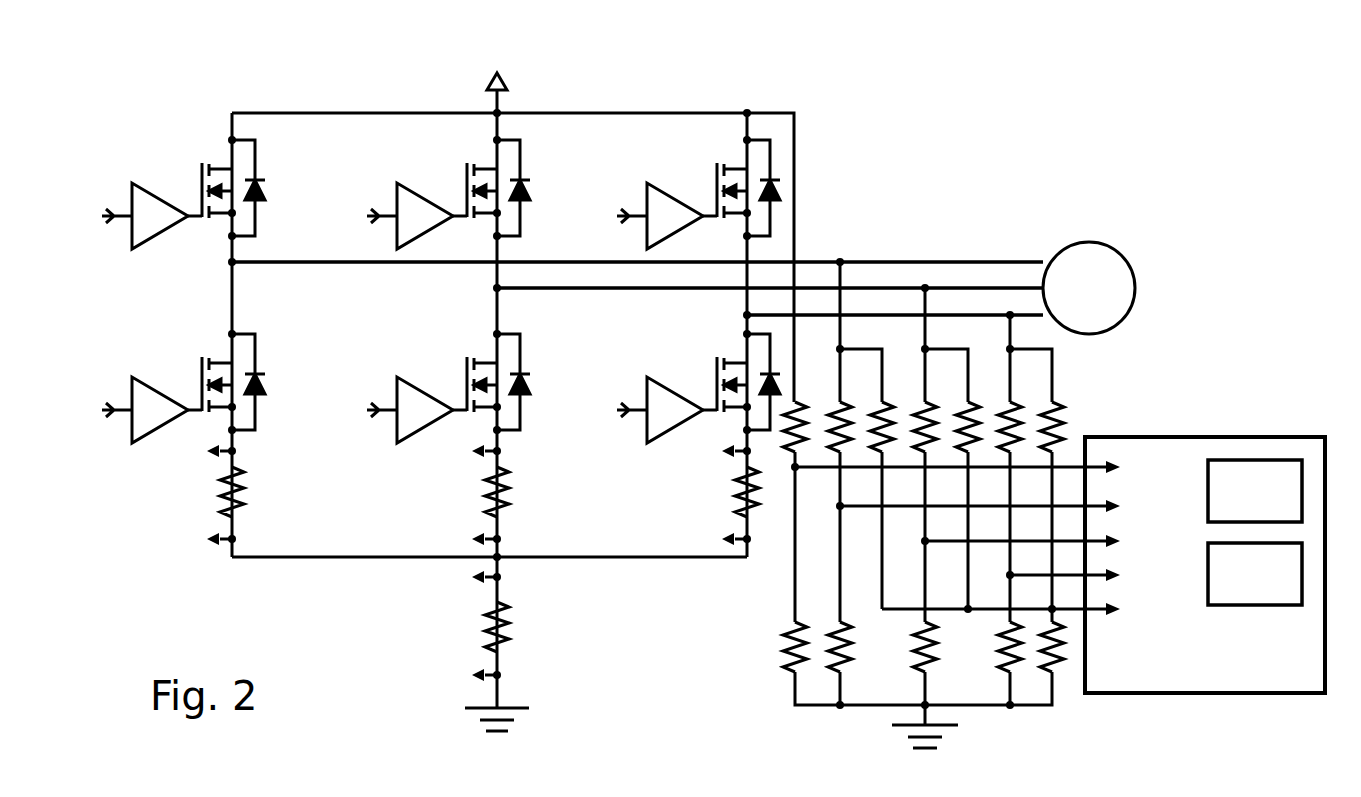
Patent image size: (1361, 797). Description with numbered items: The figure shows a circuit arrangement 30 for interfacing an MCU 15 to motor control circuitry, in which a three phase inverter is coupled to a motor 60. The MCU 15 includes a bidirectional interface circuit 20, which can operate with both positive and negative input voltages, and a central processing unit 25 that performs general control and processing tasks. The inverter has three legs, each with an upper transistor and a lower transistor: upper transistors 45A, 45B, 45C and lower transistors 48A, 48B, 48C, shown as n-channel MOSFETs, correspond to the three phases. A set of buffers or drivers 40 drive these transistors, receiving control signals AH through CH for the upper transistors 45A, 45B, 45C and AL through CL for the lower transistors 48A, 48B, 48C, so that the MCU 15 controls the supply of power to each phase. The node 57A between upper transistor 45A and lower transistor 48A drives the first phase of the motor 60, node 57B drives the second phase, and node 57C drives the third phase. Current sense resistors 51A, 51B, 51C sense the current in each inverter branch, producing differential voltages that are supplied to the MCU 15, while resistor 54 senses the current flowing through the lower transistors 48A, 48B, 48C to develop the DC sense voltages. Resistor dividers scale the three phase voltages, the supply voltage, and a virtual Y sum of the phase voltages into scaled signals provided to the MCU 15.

The circuit arrangement 30 is at (978, 97).
The drivers 40 is at (391, 300).
The upper transistor 45A is at (210, 163).
The upper transistor 45B is at (475, 163).
The upper transistor 45C is at (725, 163).
The lower transistor 48A is at (210, 357).
The lower transistor 48B is at (475, 357).
The lower transistor 48C is at (725, 357).
The current sense resistor 51A is at (240, 490).
The current sense resistor 51B is at (490, 492).
The current sense resistor 51C is at (740, 492).
The resistor 54 is at (490, 630).
The node 57A is at (882, 262).
The node 57B is at (978, 288).
The node 57C is at (1033, 315).
The motor 60 is at (1090, 242).
The MCU 15 is at (1205, 565).
The bidirectional interface circuit 20 is at (1255, 491).
The central processing unit 25 is at (1255, 574).